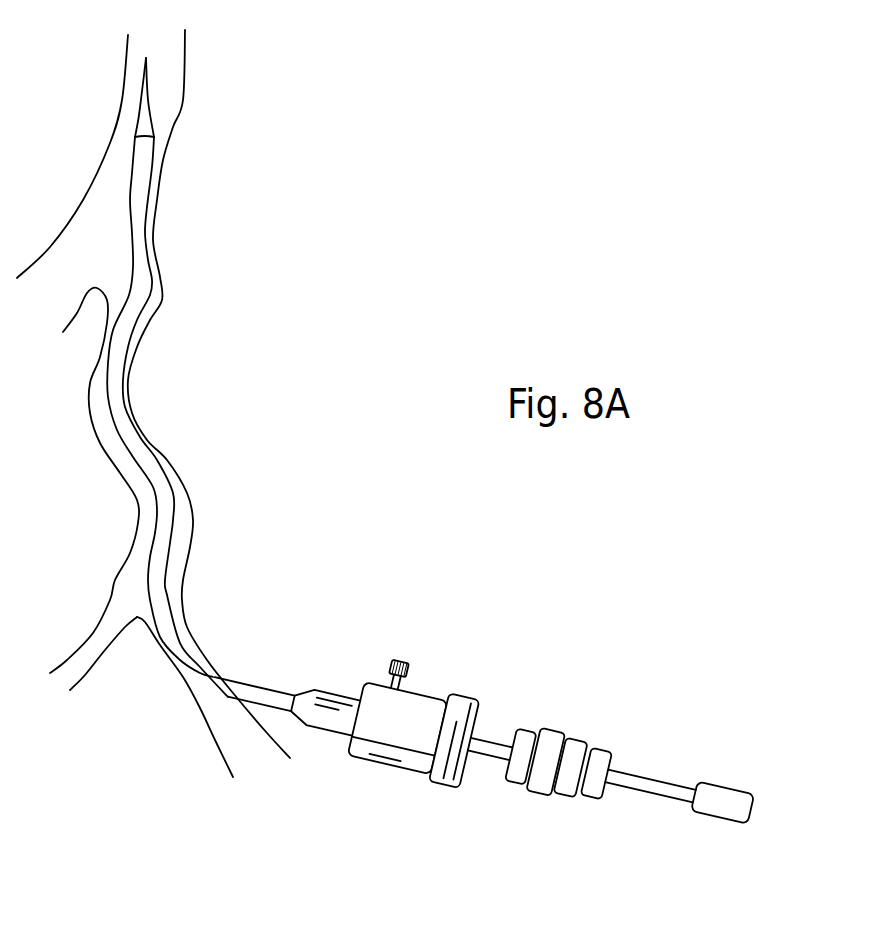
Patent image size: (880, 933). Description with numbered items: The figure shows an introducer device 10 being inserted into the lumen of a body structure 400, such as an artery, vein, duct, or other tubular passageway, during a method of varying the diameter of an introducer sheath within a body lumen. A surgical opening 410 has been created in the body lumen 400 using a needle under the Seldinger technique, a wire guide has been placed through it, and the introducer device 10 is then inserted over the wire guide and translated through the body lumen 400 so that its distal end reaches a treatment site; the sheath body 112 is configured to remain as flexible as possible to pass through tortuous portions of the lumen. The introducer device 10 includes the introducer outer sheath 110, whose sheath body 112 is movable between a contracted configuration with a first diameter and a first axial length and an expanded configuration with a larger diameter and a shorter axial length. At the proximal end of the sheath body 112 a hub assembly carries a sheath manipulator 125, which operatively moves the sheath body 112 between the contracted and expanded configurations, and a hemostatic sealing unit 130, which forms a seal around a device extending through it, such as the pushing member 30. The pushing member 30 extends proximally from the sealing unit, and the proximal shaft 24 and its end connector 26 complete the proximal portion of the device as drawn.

The introducer device 10 is at (536, 676).
The proximal shaft / tube 24 is at (647, 778).
The proximal end cap / connector 26 is at (722, 805).
The pushing member 30 is at (490, 748).
The introducer outer sheath 110 is at (425, 703).
The sheath body 112 is at (272, 697).
The sheath manipulator 125 is at (322, 720).
The hemostatic sealing unit 130 is at (395, 752).
The body structure 400 is at (192, 510).
The surgical opening 410 is at (210, 677).